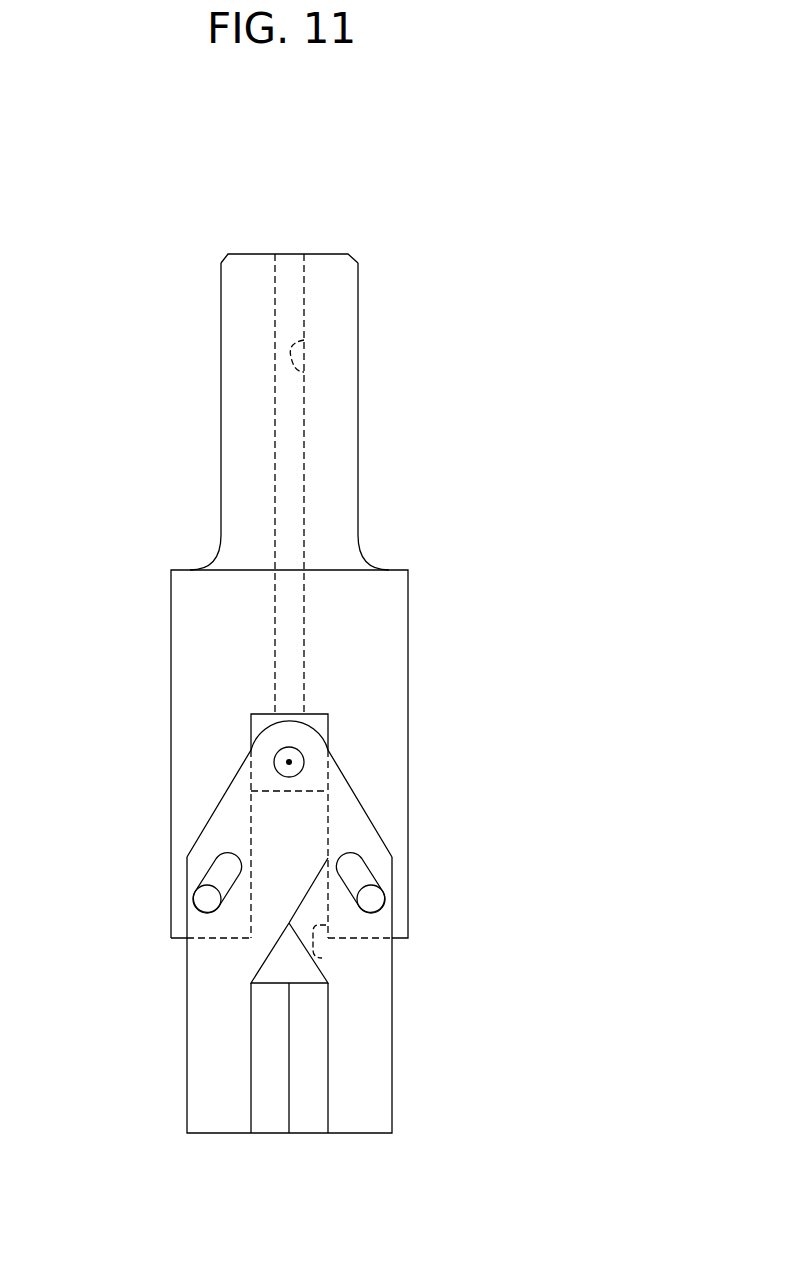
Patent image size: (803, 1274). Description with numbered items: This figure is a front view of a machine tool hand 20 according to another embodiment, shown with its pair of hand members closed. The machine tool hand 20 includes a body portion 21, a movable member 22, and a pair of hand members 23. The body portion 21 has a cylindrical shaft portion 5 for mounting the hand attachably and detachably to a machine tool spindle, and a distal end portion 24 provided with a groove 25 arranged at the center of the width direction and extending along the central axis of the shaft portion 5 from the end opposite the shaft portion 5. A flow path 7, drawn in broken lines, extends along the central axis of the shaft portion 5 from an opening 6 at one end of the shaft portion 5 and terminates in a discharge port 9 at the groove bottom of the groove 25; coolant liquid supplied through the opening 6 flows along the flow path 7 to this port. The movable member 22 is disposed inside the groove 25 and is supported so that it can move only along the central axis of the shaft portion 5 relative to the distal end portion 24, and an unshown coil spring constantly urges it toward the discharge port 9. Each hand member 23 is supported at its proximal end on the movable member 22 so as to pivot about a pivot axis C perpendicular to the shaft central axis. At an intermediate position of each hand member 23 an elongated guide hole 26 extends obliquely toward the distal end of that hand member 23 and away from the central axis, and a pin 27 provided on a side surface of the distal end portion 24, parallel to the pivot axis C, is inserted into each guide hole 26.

The shaft portion 5 is at (221, 360).
The opening 6 is at (295, 253).
The flow path 7 is at (304, 372).
The discharge port 9 is at (289, 722).
The pivot axis C is at (289, 762).
The machine tool hand 20 is at (557, 468).
The body portion 21 is at (171, 606).
The movable member 22 is at (289, 722).
The hand members 23 is at (186, 1042).
The distal end portion 24 is at (171, 777).
The groove 25 is at (322, 958).
The guide hole 26 is at (226, 868).
The pin 27 is at (207, 899).